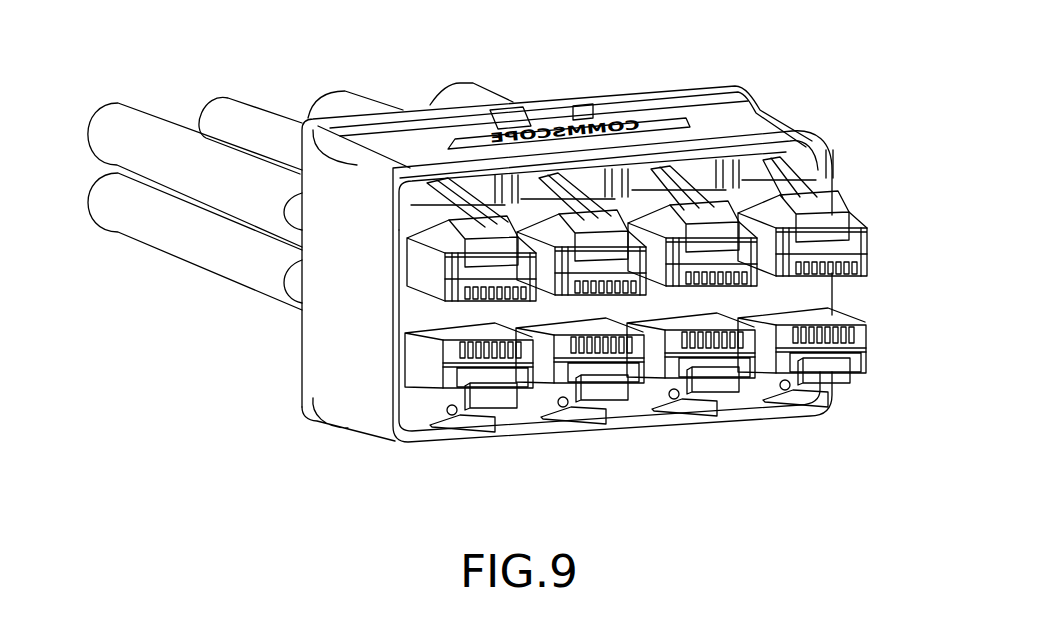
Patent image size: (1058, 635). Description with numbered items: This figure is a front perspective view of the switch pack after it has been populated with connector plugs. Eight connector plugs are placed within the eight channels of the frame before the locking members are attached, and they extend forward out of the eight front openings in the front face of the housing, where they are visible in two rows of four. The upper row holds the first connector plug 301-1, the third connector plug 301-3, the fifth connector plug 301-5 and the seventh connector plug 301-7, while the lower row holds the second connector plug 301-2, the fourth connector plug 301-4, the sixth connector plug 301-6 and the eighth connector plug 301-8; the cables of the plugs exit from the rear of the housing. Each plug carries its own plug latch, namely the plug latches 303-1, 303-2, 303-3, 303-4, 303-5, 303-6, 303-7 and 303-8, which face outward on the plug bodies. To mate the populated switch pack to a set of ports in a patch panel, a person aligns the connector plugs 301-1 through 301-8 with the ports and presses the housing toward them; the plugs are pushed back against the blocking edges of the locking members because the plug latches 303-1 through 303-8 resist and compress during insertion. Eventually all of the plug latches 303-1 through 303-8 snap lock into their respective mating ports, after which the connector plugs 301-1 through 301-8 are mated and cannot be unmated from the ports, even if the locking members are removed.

The first connector plug 301-1 is at (410, 256).
The second connector plug 301-2 is at (414, 356).
The third connector plug 301-3 is at (633, 237).
The fourth connector plug 301-4 is at (545, 375).
The fifth connector plug 301-5 is at (658, 240).
The sixth connector plug 301-6 is at (655, 375).
The seventh connector plug 301-7 is at (870, 243).
The eighth connector plug 301-8 is at (867, 343).
The plug latch 303-1 is at (460, 198).
The plug latch 303-2 is at (450, 423).
The plug latch 303-3 is at (572, 193).
The plug latch 303-4 is at (561, 420).
The plug latch 303-5 is at (690, 190).
The plug latch 303-6 is at (680, 410).
The plug latch 303-7 is at (800, 183).
The plug latch 303-8 is at (793, 405).